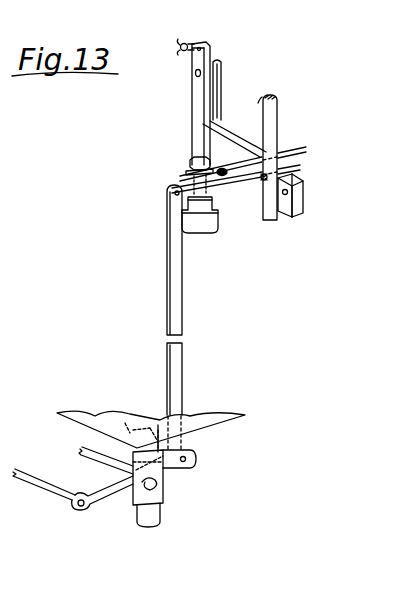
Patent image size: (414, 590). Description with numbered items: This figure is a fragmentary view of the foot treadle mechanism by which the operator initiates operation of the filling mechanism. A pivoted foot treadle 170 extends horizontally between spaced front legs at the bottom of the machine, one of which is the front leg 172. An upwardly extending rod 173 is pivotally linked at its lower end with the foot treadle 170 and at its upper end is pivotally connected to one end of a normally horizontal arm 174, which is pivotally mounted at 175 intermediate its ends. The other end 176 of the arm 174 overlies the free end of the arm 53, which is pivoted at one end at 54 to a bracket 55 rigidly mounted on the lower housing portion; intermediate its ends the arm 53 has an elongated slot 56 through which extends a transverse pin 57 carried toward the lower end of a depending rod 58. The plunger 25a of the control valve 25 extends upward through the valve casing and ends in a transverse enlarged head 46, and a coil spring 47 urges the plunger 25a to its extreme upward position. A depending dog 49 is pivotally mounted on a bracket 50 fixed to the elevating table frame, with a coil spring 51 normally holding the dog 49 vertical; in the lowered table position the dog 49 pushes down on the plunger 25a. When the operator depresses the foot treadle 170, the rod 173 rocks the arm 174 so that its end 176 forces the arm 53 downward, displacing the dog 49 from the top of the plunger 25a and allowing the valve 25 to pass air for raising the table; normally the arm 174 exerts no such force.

The control valve 25 is at (184, 234).
The plunger 25a is at (178, 186).
The transverse enlarged head 46 is at (188, 165).
The coil spring 47 is at (213, 193).
The depending dog 49 is at (197, 110).
The bracket 50 is at (221, 75).
The coil spring 51 is at (190, 42).
The arm 53 is at (226, 142).
The pivot 54 is at (302, 183).
The bracket 55 is at (302, 198).
The elongated slot 56 is at (285, 207).
The transverse pin 57 is at (270, 168).
The depending rod 58 is at (275, 124).
The foot treadle 170 is at (105, 494).
The front leg 172 is at (163, 482).
The rod 173 is at (178, 363).
The arm 174 is at (178, 182).
The pivot 175 is at (227, 175).
The other end 176 is at (258, 103).